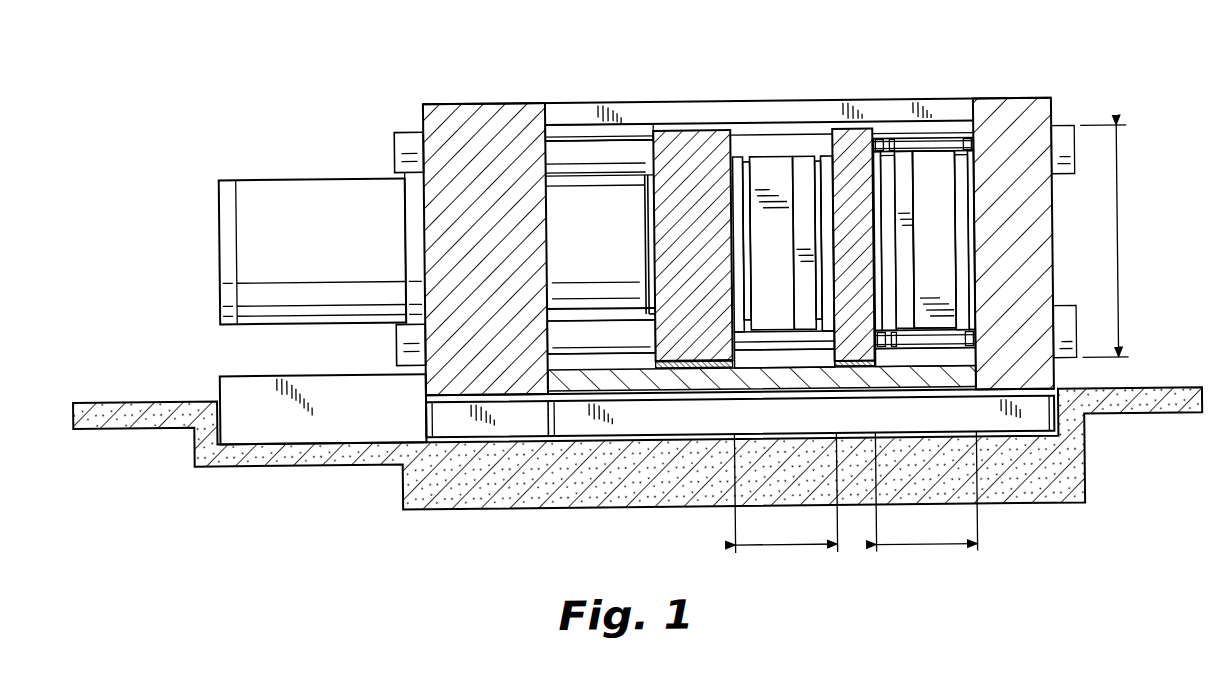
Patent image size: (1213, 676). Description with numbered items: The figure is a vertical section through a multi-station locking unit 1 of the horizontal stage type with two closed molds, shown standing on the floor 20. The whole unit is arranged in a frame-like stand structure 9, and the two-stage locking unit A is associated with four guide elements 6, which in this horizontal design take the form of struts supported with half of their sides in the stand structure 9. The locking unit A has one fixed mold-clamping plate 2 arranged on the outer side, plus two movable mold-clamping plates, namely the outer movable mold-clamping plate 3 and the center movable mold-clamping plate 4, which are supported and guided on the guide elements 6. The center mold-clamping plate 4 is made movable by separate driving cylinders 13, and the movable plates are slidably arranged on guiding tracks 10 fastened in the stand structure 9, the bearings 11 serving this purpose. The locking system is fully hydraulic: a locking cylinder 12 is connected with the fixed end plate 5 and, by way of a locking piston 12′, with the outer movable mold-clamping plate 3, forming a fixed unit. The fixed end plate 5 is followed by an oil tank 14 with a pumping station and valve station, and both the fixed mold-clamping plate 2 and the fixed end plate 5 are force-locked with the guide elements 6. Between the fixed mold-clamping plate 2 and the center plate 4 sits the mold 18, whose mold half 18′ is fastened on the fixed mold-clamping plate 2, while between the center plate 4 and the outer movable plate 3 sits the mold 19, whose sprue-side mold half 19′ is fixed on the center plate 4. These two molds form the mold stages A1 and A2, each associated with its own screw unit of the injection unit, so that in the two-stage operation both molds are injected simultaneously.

The multi-station locking unit 1 is at (536, 50).
The fixed mold-clamping plate 2 is at (1019, 108).
The outer movable mold-clamping plate 3 is at (694, 142).
The center movable mold-clamping plate 4 is at (855, 139).
The fixed end plate 5 is at (487, 115).
The guide elements 6 is at (629, 146).
The frame-like stand structure 9 is at (509, 421).
The guiding tracks 10 is at (631, 380).
The bearings 11 is at (705, 372).
The locking cylinders 12 is at (317, 184).
The locking pistons 12′ is at (584, 195).
The driving cylinders 13 is at (935, 146).
The oil tank 14 is at (346, 420).
The mold 18 is at (921, 336).
The mold half 18′ is at (893, 172).
The mold 19 is at (769, 336).
The mold half 19′ is at (817, 170).
The floor 20 is at (137, 392).
The locking unit A is at (1109, 241).
The mold stage A1 is at (926, 506).
The mold stage A2 is at (786, 507).